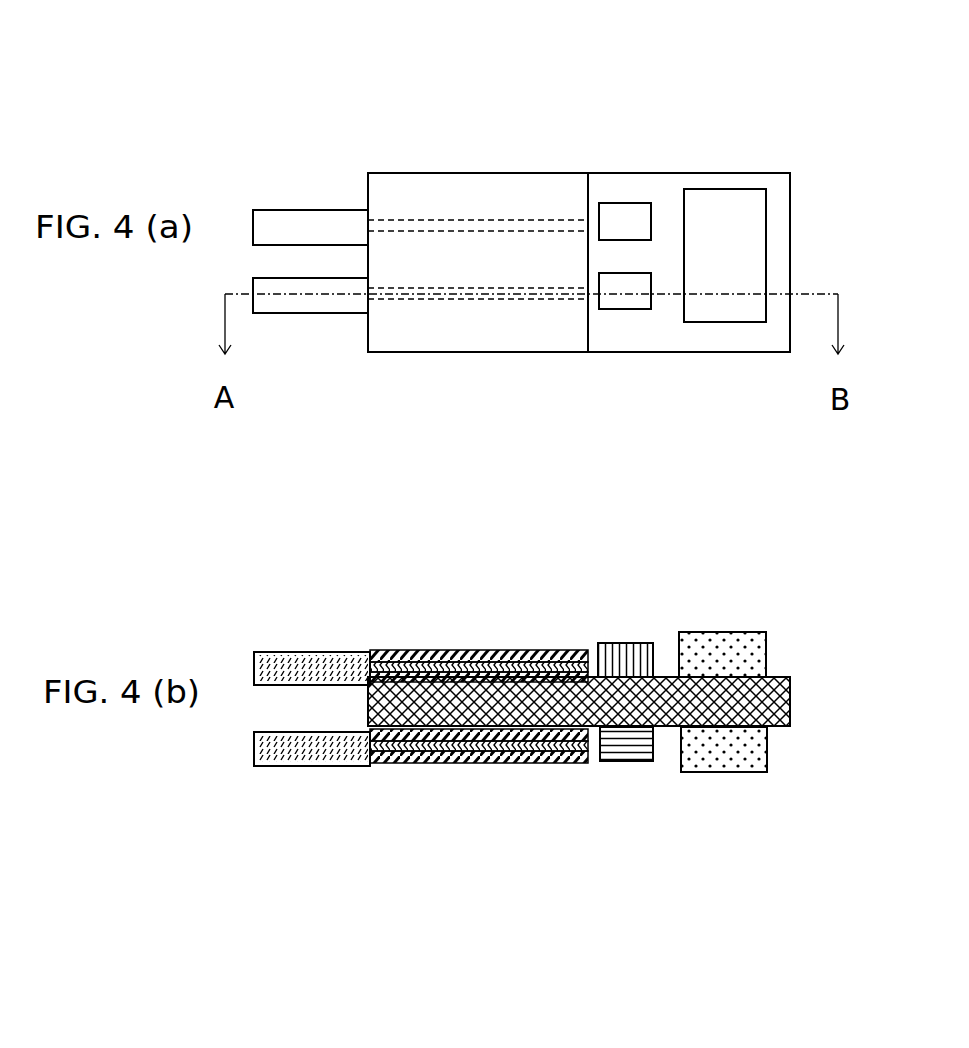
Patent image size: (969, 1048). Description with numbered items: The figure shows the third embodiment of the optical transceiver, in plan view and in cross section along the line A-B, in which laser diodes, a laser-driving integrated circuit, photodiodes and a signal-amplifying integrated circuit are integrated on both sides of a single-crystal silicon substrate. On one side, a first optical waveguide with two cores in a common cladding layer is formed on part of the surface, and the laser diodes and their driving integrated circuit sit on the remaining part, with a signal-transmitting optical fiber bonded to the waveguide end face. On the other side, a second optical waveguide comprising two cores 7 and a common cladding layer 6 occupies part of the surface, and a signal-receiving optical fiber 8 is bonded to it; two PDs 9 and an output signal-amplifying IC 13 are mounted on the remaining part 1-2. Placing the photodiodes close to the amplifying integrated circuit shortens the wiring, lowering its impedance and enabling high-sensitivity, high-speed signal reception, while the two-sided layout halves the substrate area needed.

The remaining part of the second side 1-2 is at (665, 727).
The common cladding layer 6 is at (450, 765).
The cores 7 is at (510, 765).
The signal-receiving optical fiber 8 is at (312, 762).
The PD 9 is at (623, 762).
The output signal-amplifying IC 13 is at (752, 757).